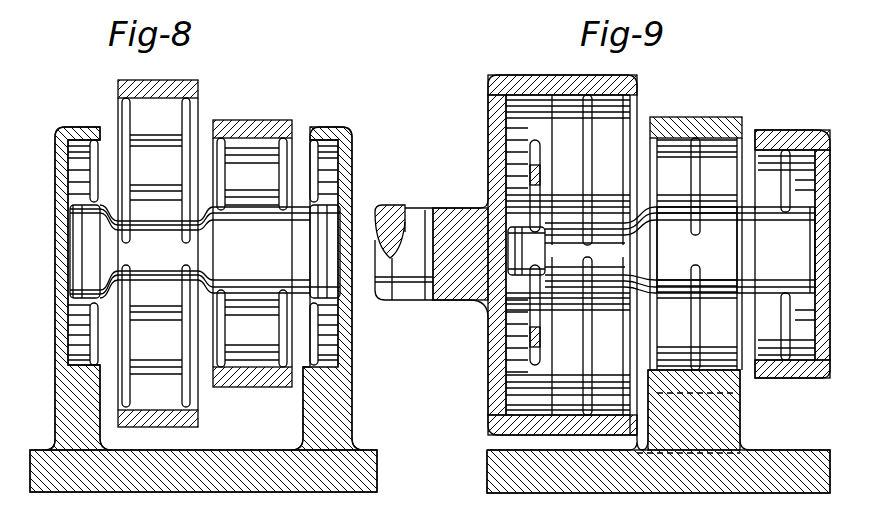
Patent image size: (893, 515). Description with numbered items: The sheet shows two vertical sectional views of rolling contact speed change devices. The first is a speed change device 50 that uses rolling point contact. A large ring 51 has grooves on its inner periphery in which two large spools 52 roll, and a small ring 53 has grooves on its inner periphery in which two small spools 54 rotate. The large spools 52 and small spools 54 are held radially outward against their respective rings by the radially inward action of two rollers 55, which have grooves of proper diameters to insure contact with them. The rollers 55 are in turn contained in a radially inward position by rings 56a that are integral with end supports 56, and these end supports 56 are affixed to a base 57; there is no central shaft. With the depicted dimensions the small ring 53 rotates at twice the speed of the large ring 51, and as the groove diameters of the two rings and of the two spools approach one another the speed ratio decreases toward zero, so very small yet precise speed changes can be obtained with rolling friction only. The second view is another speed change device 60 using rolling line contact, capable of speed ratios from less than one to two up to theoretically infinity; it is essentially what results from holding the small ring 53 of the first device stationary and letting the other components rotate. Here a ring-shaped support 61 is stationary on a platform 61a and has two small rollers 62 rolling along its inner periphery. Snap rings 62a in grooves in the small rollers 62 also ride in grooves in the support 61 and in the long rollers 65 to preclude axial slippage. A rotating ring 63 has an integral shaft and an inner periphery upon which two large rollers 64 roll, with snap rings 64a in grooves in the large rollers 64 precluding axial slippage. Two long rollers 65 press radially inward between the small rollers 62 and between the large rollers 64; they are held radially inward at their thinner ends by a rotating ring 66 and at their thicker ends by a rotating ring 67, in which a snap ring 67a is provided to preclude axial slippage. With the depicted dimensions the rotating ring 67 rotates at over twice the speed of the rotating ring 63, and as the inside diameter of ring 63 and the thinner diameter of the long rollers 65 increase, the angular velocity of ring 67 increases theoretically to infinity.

In FIG. 8, the speed change device 50 is at (302, 75).
In FIG. 8, the large ring 51 is at (186, 80).
In FIG. 8, the large spools 52 is at (192, 122).
In FIG. 8, the small ring 53 is at (230, 389).
In FIG. 8, the small spools 54 is at (217, 347).
In FIG. 8, the rollers 55 is at (267, 262).
In FIG. 8, the end supports 56 is at (55, 348).
In FIG. 8, the rings 56a is at (100, 157).
In FIG. 8, the base 57 is at (215, 450).
In FIG. 9, the speed change device 60 is at (775, 72).
In FIG. 9, the ring-shaped support 61 is at (660, 117).
In FIG. 9, the platform 61a is at (763, 453).
In FIG. 9, the small rollers 62 is at (731, 190).
In FIG. 9, the snap rings 62a is at (690, 330).
In FIG. 9, the rotating ring 63 is at (488, 122).
In FIG. 9, the large rollers 64 is at (578, 172).
In FIG. 9, the snap rings 64a is at (583, 327).
In FIG. 9, the long rollers 65 is at (753, 265).
In FIG. 9, the rotating ring 66 is at (532, 197).
In FIG. 9, the rotating ring 67 is at (770, 380).
In FIG. 9, the snap ring 67a is at (777, 173).